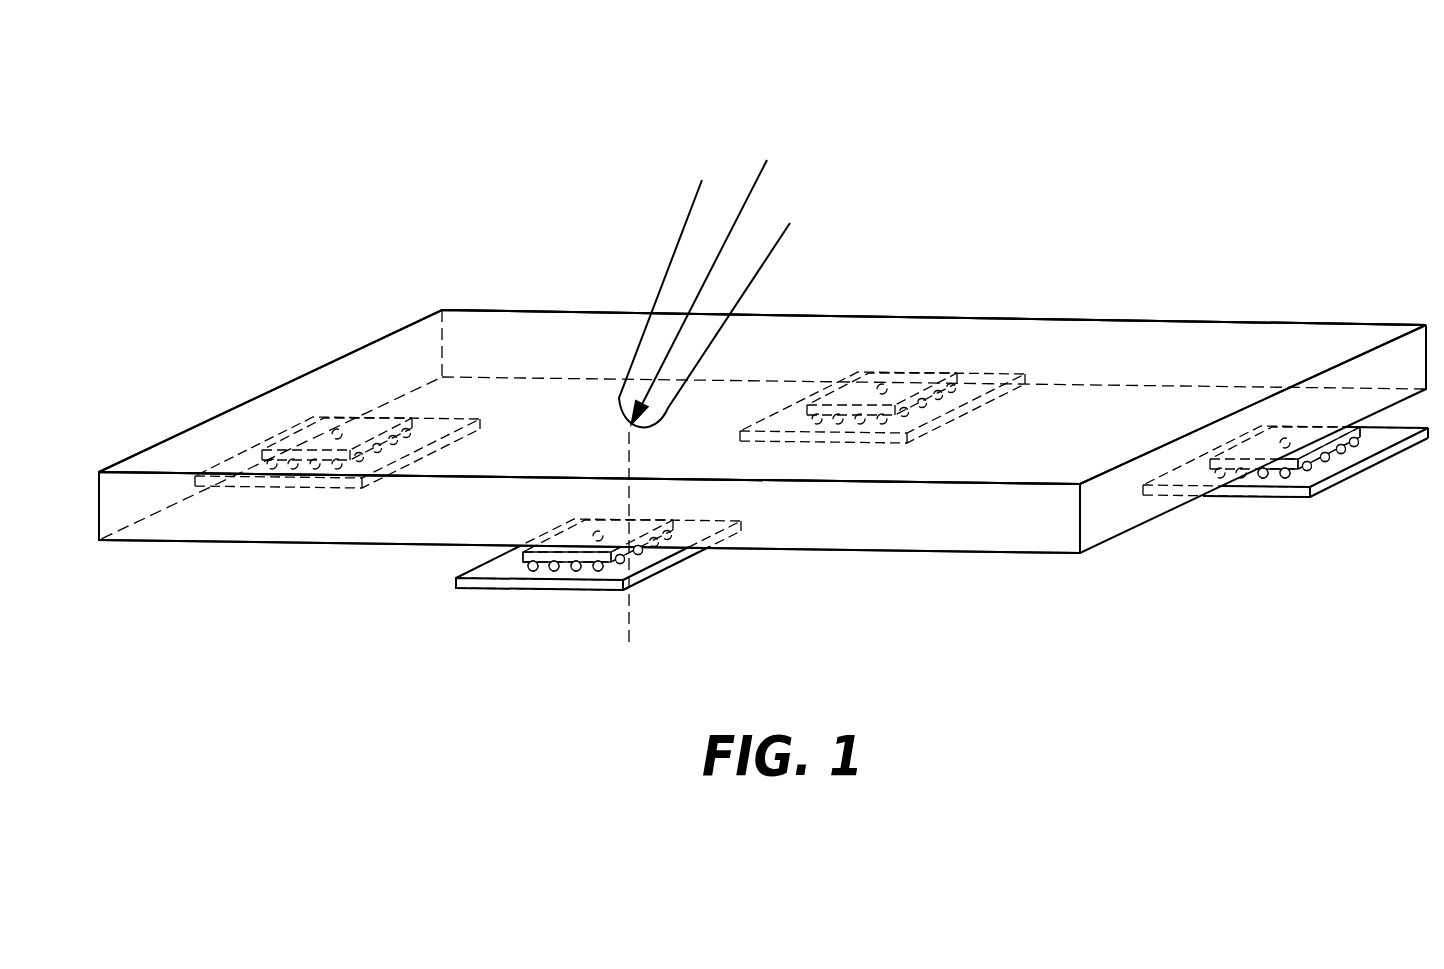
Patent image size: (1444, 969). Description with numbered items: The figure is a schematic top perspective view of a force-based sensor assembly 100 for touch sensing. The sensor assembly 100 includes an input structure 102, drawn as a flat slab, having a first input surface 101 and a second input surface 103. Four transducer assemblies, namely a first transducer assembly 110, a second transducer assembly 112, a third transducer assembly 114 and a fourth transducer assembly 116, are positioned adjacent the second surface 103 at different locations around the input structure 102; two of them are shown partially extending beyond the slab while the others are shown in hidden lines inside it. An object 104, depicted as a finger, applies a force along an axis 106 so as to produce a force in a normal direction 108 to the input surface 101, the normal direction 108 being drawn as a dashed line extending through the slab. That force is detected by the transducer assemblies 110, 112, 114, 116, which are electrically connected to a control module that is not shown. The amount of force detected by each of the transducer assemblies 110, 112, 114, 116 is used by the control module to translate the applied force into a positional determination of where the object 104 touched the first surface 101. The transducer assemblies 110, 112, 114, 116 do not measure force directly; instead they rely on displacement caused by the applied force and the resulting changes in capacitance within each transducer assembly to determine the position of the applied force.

The force-based sensor assembly 100 is at (1021, 158).
The first input surface 101 is at (980, 557).
The input structure 102 is at (1241, 312).
The second input surface 103 is at (498, 332).
The object 104 is at (763, 223).
The axis 106 is at (757, 180).
The normal direction 108 is at (630, 618).
The first transducer assembly 110 is at (1293, 512).
The second transducer assembly 112 is at (503, 600).
The third transducer assembly 114 is at (278, 495).
The fourth transducer assembly 116 is at (914, 366).